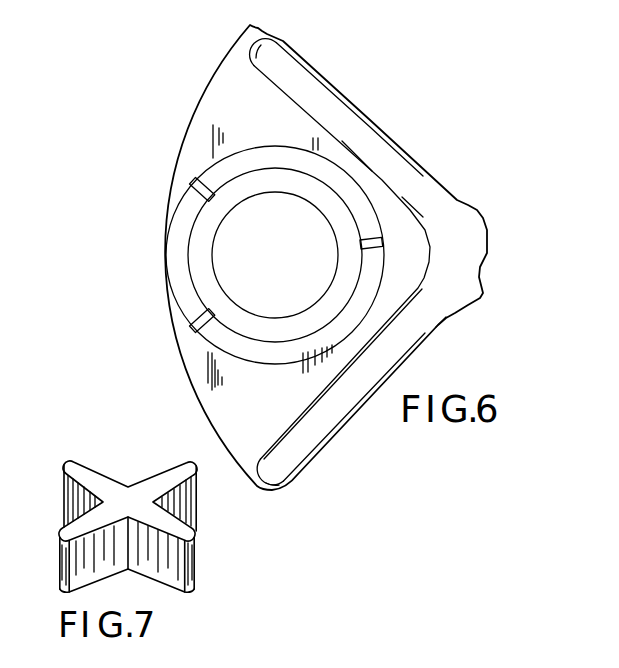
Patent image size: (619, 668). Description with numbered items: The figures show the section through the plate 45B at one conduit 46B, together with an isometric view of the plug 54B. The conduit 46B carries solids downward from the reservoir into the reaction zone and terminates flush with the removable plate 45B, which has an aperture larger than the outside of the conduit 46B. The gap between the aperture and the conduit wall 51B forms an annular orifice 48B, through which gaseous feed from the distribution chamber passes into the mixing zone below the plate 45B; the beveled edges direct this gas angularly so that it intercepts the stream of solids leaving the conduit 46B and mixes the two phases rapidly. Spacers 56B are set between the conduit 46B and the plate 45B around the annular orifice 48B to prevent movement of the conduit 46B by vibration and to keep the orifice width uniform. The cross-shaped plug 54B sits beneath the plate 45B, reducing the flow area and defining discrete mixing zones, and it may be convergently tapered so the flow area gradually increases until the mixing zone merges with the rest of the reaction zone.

In FIG. 6, the removable plate 45B is at (275, 270).
In FIG. 6, the conduit 46B is at (304, 272).
In FIG. 6, the annular orifice 48B is at (176, 241).
In FIG. 6, the conduit wall 51B is at (266, 165).
In FIG. 6, the plug 54B is at (340, 262).
In FIG. 7, the plug 54B is at (97, 477).
In FIG. 6, the spacer 56B is at (194, 186).